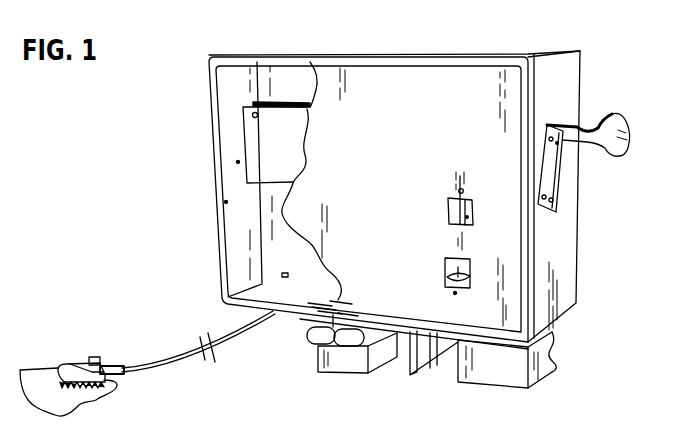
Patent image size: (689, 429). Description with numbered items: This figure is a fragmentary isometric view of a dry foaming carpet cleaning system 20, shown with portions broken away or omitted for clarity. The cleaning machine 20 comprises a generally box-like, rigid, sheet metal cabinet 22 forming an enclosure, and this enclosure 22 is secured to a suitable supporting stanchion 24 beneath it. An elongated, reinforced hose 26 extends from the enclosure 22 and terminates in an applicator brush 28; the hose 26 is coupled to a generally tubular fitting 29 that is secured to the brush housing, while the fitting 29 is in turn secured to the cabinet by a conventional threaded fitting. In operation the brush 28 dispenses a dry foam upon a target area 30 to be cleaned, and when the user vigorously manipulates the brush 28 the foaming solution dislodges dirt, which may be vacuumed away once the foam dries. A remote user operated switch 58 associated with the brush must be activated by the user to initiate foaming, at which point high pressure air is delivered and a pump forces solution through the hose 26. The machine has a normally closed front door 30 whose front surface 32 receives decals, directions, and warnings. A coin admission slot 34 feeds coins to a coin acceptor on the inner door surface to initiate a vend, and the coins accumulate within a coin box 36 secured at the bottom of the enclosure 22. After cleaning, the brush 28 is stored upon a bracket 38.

The dry foaming carpet cleaning system 20 is at (470, 49).
The cabinet 22 is at (552, 284).
The supporting stanchion 24 is at (542, 349).
The hose 26 is at (162, 368).
The applicator brush 28 is at (68, 358).
The tubular fitting 29 is at (102, 366).
The target area 30 is at (513, 108).
The front surface 32 is at (449, 133).
The coin admission slot 34 is at (456, 210).
The coin box 36 is at (349, 378).
The bracket 38 is at (588, 155).
The remote user operated switch 58 is at (86, 362).